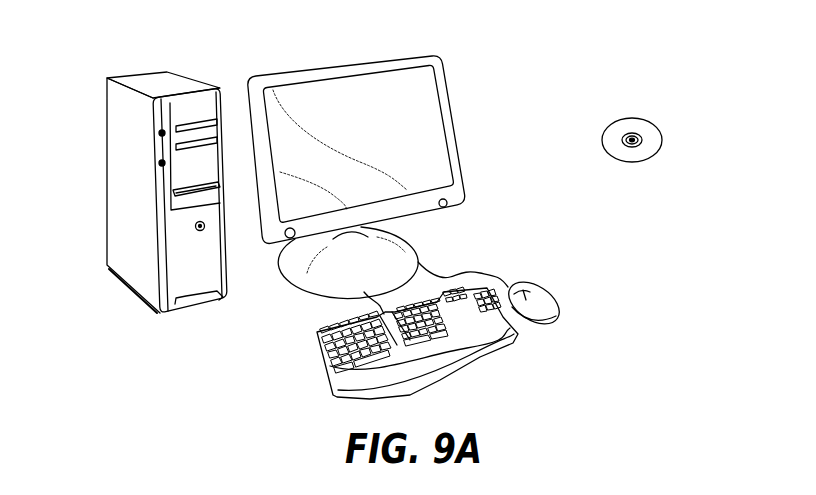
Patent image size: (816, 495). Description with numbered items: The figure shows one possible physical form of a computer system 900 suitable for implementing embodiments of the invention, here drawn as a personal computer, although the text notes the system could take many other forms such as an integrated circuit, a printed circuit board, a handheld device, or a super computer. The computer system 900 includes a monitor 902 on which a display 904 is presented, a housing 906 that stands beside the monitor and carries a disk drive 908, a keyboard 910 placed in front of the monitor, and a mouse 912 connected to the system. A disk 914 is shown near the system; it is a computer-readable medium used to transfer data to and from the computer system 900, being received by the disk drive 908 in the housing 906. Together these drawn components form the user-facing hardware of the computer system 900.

The computer system 900 is at (566, 37).
The monitor 902 is at (458, 148).
The display 904 is at (417, 90).
The housing 906 is at (155, 82).
The disk drive 908 is at (217, 190).
The keyboard 910 is at (332, 372).
The mouse 912 is at (557, 295).
The disk 914 is at (647, 118).